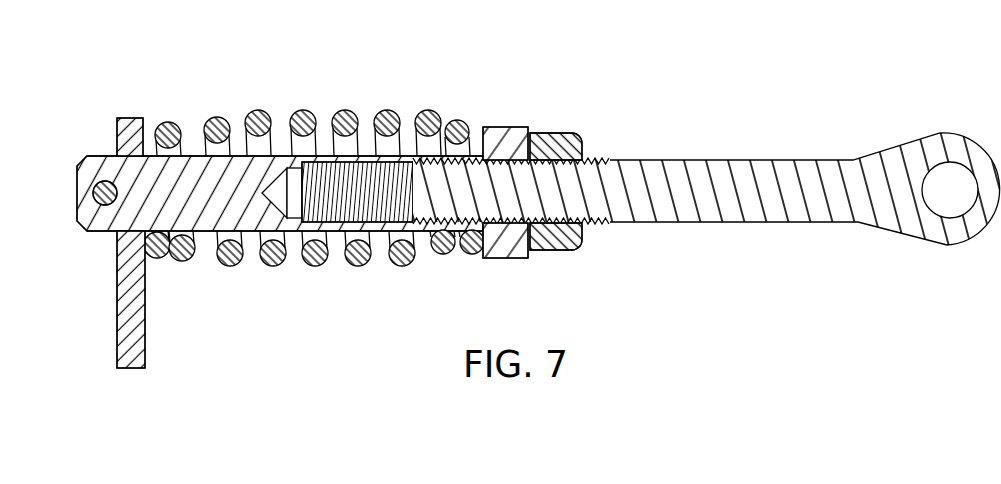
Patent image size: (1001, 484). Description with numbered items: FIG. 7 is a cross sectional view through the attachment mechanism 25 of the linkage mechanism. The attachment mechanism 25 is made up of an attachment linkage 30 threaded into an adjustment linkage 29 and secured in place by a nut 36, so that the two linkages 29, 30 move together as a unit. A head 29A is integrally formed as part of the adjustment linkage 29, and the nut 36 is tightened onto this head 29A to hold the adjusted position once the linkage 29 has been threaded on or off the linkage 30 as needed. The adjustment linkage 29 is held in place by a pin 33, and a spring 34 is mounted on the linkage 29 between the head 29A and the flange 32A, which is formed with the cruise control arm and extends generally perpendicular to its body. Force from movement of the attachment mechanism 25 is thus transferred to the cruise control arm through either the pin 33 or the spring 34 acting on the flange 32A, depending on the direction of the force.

The attachment mechanism 25 is at (703, 108).
The adjustment linkage 29 is at (97, 162).
The head 29A is at (502, 127).
The attachment linkage 30 is at (727, 222).
The flange 32A is at (145, 303).
The pin 33 is at (95, 188).
The spring 34 is at (294, 113).
The nut 36 is at (557, 251).